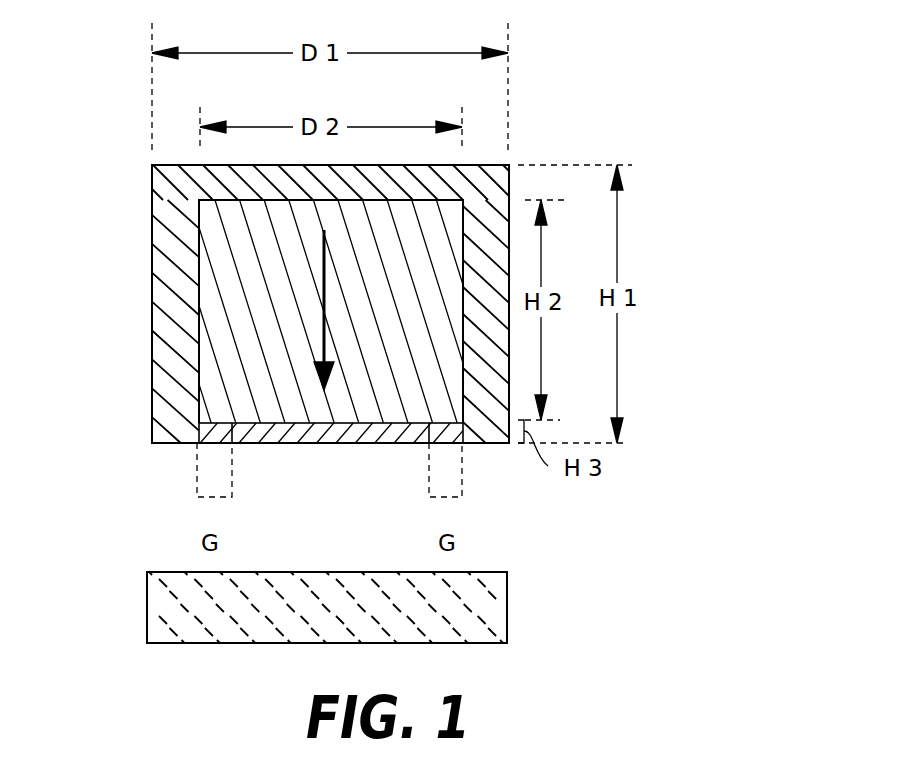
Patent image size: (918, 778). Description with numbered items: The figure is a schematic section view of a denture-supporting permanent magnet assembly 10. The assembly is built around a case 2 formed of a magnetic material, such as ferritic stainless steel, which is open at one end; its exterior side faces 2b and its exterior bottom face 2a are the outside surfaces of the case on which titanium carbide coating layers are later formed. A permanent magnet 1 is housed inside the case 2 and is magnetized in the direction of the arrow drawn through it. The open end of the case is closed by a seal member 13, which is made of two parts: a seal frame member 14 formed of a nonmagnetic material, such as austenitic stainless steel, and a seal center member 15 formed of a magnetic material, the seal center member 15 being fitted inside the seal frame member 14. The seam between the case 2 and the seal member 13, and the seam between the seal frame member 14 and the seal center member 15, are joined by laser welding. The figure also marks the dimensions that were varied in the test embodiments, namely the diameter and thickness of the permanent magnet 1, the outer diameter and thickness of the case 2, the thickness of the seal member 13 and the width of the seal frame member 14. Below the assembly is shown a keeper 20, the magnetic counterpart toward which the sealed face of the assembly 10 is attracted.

The denture-supporting permanent magnet assembly 10 is at (541, 137).
The permanent magnet 1 is at (247, 345).
The case 2 is at (165, 252).
The exterior bottom face of the case 2a is at (165, 443).
The exterior side faces of the case 2b is at (152, 283).
The seal member 13 is at (340, 470).
The seal frame member 14 is at (212, 436).
The seal center member 15 is at (287, 435).
The keeper 20 is at (490, 598).